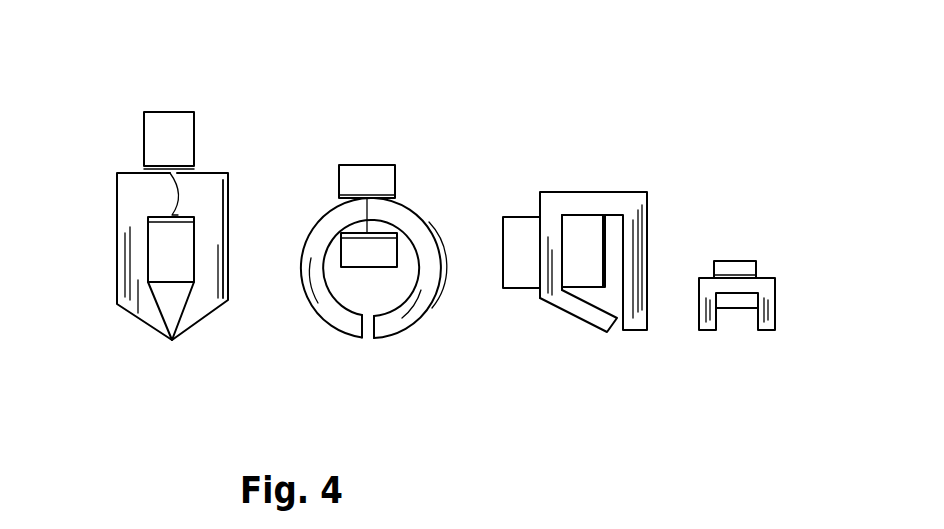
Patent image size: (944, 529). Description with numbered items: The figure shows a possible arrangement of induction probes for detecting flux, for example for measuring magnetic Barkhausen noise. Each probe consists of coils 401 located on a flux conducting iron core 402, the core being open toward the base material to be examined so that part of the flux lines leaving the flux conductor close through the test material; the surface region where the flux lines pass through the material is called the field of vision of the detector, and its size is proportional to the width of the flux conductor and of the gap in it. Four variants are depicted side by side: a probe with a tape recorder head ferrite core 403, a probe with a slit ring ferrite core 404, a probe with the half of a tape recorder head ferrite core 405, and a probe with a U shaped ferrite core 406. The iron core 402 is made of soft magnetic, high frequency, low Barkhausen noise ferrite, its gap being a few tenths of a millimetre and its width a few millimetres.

The coil 401 is at (185, 128).
The flux conducting iron core 402 is at (702, 318).
The probe with a tape recorder head ferrite core 403 is at (140, 332).
The probe with slit ring ferrite core 404 is at (333, 333).
The probe with the half of a tape recorder head ferrite core 405 is at (597, 342).
The probe with U shaped ferrite core 406 is at (752, 332).